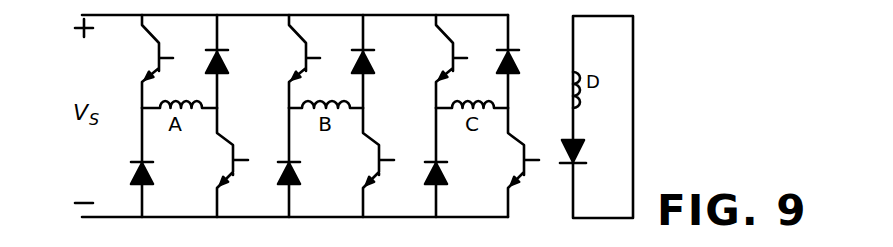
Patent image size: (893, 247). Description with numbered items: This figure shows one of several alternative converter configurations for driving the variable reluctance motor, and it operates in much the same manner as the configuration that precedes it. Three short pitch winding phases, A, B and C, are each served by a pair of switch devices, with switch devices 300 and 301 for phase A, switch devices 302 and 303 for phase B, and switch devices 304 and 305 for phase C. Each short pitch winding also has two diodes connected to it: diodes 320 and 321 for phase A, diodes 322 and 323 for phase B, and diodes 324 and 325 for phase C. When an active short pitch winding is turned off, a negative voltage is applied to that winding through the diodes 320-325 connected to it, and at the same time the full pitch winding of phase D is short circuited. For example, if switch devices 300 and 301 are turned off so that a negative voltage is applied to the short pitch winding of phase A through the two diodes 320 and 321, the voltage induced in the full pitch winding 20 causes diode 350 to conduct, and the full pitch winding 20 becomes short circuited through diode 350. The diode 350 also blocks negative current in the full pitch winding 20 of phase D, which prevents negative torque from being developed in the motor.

The switch device 300 is at (148, 75).
The switch device 301 is at (223, 177).
The switch device 302 is at (293, 72).
The switch device 303 is at (370, 177).
The switch device 304 is at (443, 73).
The switch device 305 is at (515, 177).
The diode 320 is at (130, 164).
The diode 321 is at (222, 73).
The diode 322 is at (284, 181).
The diode 323 is at (367, 73).
The diode 324 is at (430, 181).
The diode 325 is at (511, 73).
The full pitch winding 20 is at (578, 108).
The diode 350 is at (577, 165).